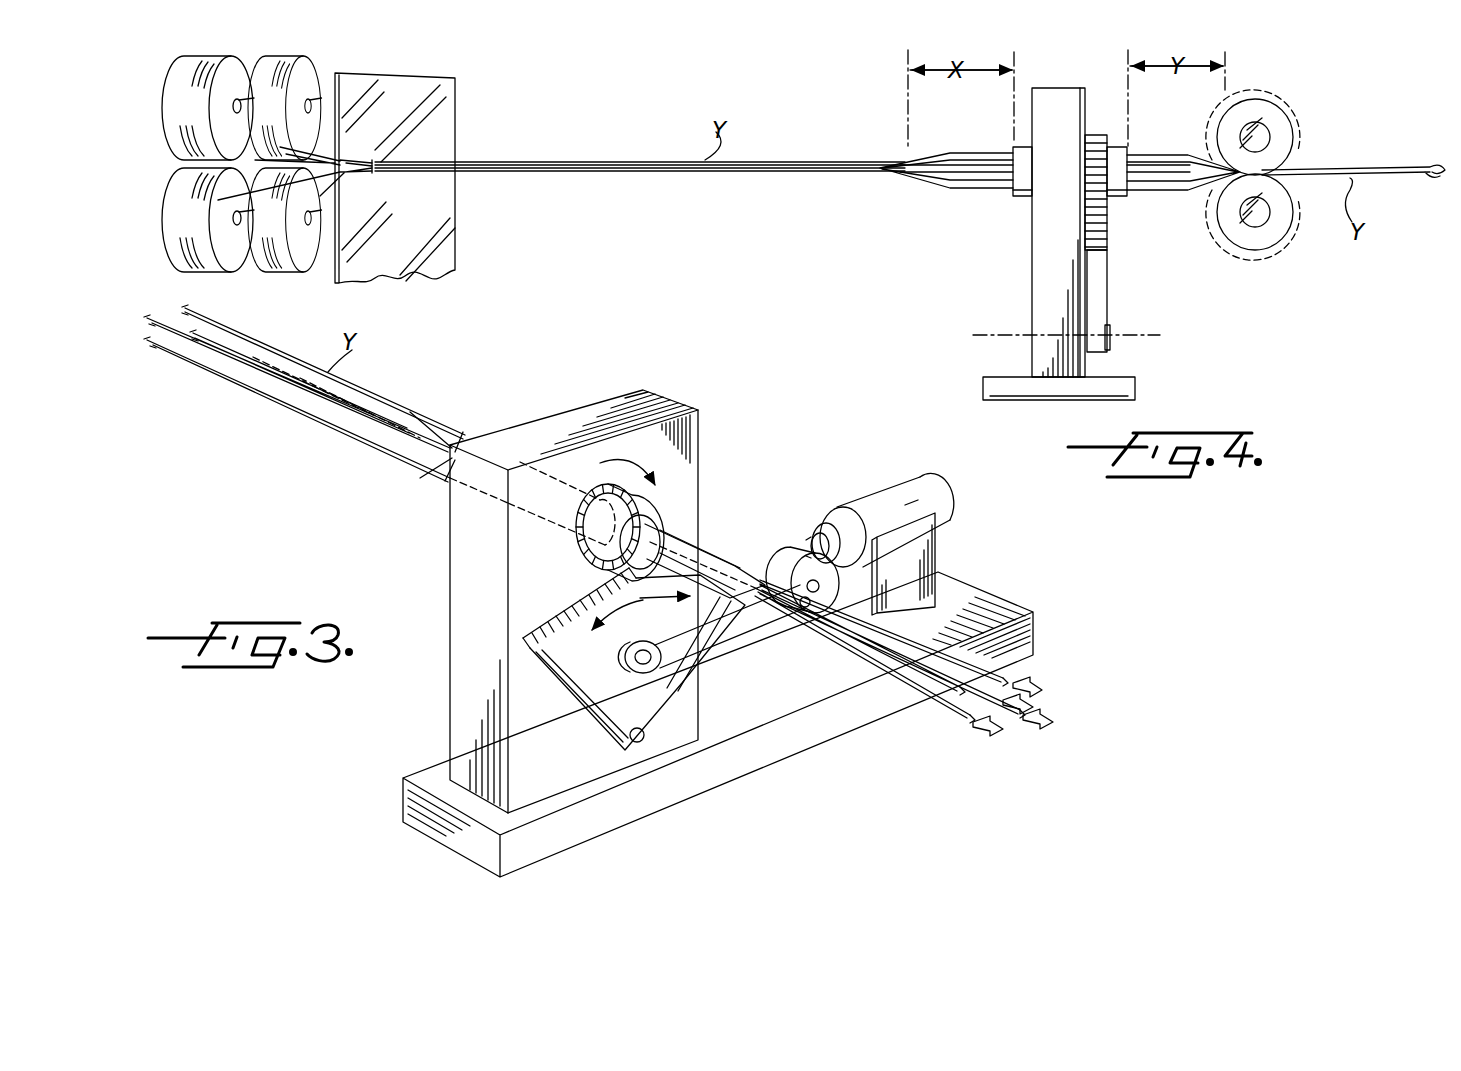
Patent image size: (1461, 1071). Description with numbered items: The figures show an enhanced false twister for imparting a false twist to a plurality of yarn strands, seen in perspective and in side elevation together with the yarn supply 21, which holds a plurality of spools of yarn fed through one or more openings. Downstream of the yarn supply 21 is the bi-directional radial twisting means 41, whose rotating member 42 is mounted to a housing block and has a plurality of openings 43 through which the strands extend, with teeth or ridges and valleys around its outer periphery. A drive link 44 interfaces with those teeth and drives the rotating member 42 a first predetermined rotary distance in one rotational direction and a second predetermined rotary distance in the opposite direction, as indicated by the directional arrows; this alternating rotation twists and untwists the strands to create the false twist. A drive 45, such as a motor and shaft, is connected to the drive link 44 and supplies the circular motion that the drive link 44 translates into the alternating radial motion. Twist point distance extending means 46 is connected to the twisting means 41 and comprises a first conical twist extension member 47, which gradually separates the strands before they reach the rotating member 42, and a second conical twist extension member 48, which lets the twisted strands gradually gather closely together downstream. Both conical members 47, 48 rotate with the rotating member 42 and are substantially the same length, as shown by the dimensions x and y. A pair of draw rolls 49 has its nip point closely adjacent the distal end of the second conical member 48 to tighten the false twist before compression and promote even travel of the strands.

In FIG. 4, the yarn supply 21 is at (512, 97).
In FIG. 4, the bi-directional radial twisting means 41 is at (1012, 220).
In FIG. 3, the bi-directional radial twisting means 41 is at (808, 483).
In FIG. 4, the rotating member 42 is at (1098, 135).
In FIG. 3, the rotating member 42 is at (618, 492).
In FIG. 3, the openings 43 is at (563, 552).
In FIG. 3, the drive link 44 is at (752, 660).
In FIG. 3, the drive 45 is at (880, 525).
In FIG. 4, the twist point distance extending means 46 is at (962, 205).
In FIG. 3, the twist point distance extending means 46 is at (478, 417).
In FIG. 4, the first conical twist extension member 47 is at (975, 160).
In FIG. 3, the first conical twist extension member 47 is at (438, 438).
In FIG. 4, the second conical twist extension member 48 is at (1145, 162).
In FIG. 3, the second conical twist extension member 48 is at (678, 537).
In FIG. 4, the draw rolls 49 is at (1300, 150).